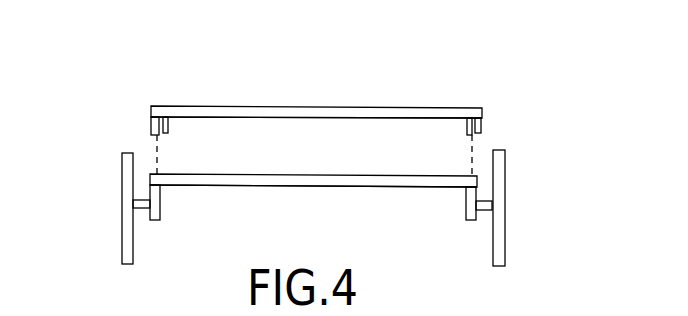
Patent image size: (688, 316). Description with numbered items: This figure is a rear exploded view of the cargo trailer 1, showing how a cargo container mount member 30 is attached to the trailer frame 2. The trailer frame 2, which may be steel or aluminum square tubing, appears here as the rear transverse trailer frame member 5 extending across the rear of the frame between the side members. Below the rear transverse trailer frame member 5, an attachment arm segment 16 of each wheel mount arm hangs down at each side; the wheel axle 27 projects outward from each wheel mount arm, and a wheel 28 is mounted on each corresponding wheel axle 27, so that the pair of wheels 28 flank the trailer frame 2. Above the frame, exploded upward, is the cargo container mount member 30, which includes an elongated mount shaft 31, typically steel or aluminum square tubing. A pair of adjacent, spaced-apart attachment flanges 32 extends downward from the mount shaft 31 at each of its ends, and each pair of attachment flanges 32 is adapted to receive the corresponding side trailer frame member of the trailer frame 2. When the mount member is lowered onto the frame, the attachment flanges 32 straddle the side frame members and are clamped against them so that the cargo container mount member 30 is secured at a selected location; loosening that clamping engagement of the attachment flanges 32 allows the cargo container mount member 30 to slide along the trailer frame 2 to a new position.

The cargo trailer 1 is at (193, 78).
The trailer frame 2 is at (300, 193).
The rear transverse trailer frame member 5 is at (368, 180).
The attachment arm segment 16 is at (158, 200).
The wheel axle 27 is at (140, 208).
The wheel 28 is at (128, 178).
The cargo container mount member 30 is at (346, 104).
The mount shaft 31 is at (248, 112).
The attachment flange 32 is at (152, 129).